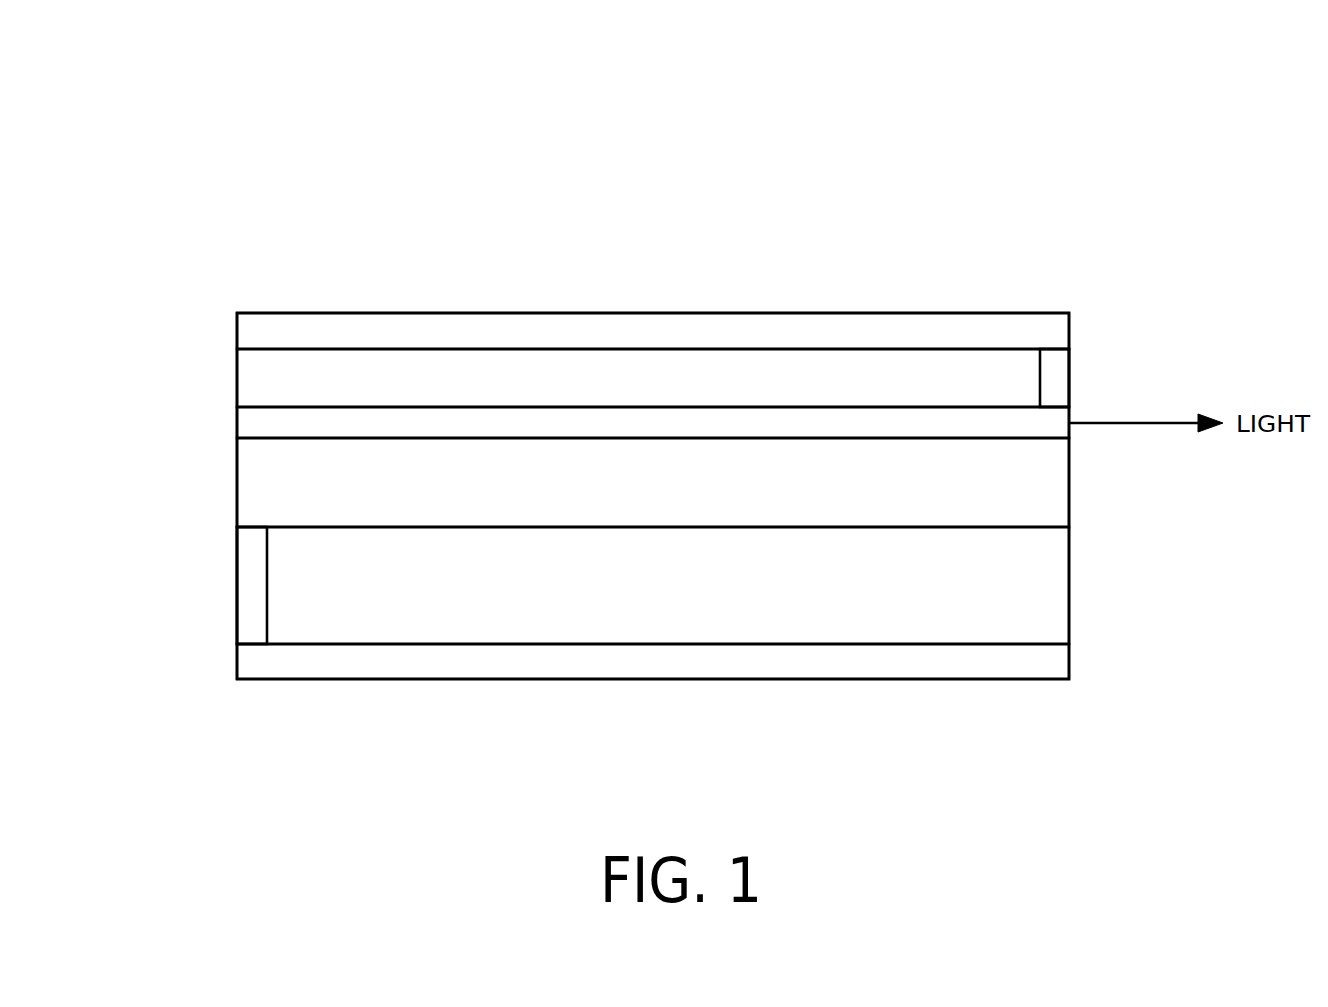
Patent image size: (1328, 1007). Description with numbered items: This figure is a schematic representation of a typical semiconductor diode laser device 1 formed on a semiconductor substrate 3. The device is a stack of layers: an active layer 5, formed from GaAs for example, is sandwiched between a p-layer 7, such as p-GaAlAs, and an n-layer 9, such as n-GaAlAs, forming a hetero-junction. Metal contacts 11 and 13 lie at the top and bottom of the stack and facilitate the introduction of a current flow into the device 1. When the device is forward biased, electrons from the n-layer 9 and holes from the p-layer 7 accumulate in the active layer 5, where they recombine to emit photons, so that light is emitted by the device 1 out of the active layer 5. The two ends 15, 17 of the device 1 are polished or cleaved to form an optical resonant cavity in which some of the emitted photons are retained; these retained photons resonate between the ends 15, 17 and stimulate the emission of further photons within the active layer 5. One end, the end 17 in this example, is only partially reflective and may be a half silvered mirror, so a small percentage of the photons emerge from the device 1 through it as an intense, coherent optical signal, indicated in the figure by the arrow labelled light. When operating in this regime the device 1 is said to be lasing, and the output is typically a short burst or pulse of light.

The diode laser device 1 is at (131, 142).
The semiconductor substrate 3 is at (1045, 630).
The active layer 5 is at (1010, 425).
The p-layer 7 is at (400, 365).
The n-layer 9 is at (260, 460).
The metal contact 11 is at (855, 328).
The metal contact 13 is at (400, 665).
The end 15 is at (237, 610).
The end 17 is at (1069, 369).